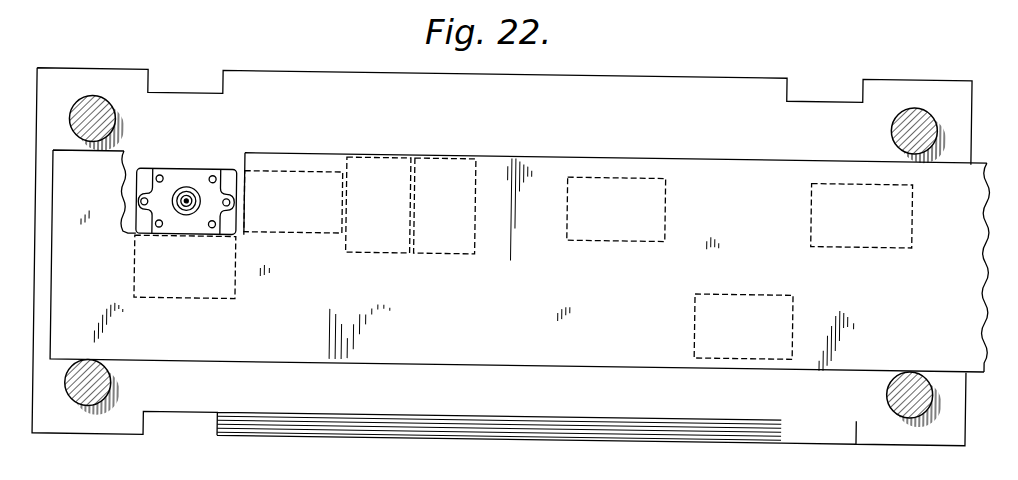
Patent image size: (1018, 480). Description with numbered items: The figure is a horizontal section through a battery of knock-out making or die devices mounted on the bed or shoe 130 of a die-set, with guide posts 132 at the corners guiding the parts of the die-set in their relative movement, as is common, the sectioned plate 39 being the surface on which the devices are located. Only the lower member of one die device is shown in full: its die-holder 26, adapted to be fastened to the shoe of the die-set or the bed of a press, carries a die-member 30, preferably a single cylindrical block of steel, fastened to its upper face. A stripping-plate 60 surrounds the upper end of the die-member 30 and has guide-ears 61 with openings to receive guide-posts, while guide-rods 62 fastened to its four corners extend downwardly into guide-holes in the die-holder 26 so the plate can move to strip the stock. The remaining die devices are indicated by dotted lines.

The bed or shoe of a die-set 130 is at (418, 129).
The panel 39 is at (292, 343).
The guide posts 132 is at (100, 119).
The die-holder 26 is at (228, 174).
The stripping-plate 60 is at (181, 232).
The die-member 30 is at (181, 189).
The guide-ears 61 is at (232, 202).
The guide-rods 62 is at (213, 226).